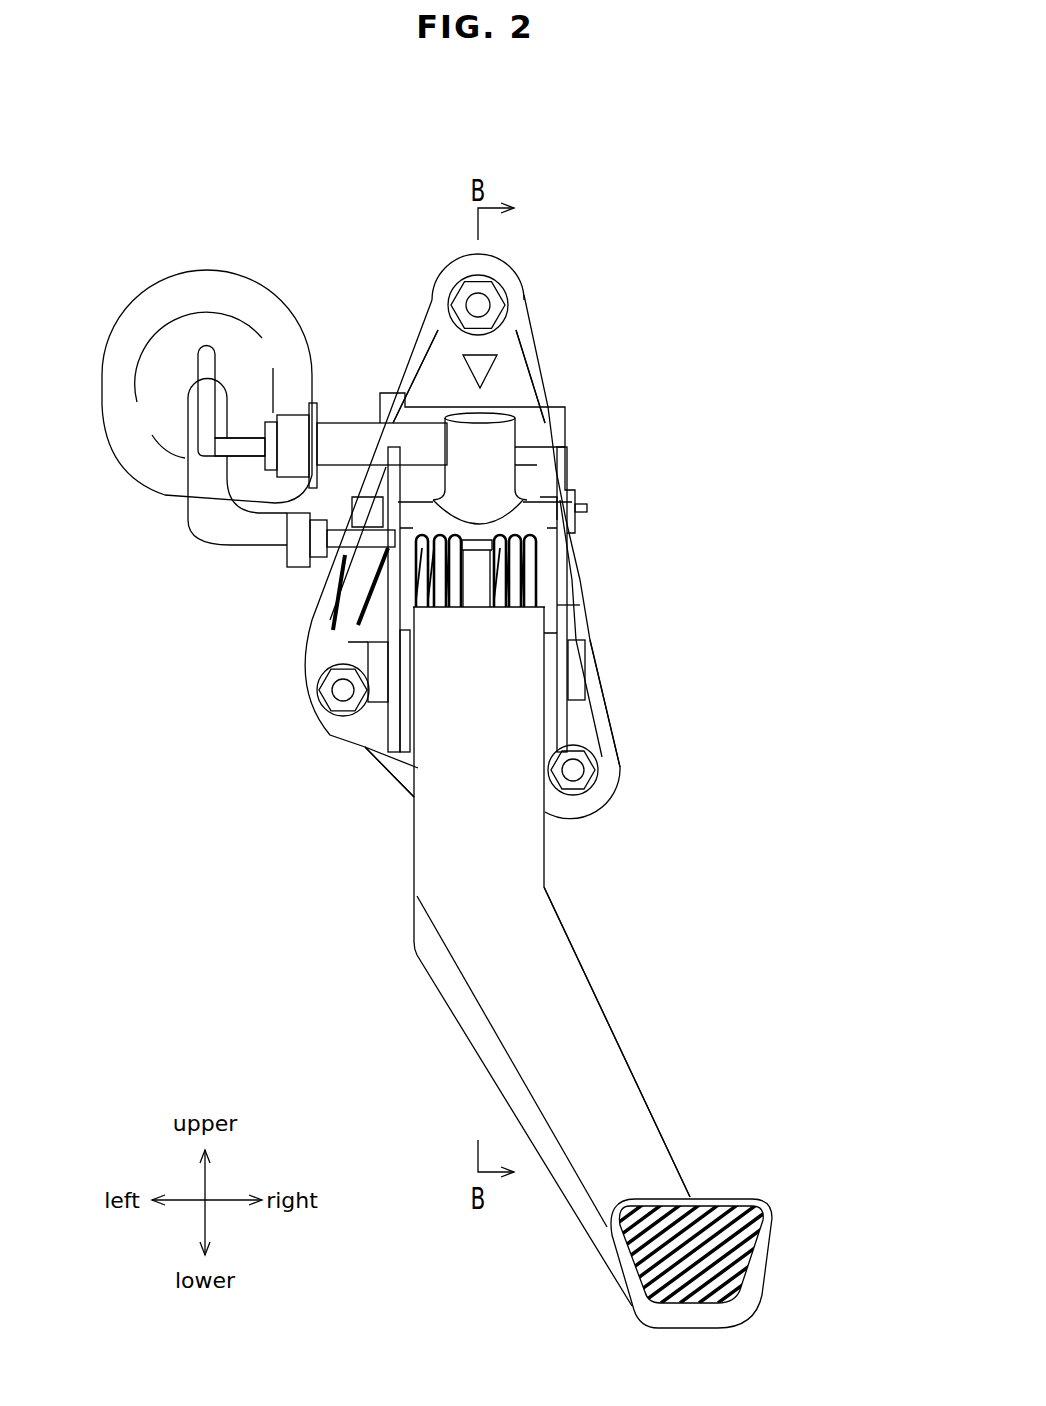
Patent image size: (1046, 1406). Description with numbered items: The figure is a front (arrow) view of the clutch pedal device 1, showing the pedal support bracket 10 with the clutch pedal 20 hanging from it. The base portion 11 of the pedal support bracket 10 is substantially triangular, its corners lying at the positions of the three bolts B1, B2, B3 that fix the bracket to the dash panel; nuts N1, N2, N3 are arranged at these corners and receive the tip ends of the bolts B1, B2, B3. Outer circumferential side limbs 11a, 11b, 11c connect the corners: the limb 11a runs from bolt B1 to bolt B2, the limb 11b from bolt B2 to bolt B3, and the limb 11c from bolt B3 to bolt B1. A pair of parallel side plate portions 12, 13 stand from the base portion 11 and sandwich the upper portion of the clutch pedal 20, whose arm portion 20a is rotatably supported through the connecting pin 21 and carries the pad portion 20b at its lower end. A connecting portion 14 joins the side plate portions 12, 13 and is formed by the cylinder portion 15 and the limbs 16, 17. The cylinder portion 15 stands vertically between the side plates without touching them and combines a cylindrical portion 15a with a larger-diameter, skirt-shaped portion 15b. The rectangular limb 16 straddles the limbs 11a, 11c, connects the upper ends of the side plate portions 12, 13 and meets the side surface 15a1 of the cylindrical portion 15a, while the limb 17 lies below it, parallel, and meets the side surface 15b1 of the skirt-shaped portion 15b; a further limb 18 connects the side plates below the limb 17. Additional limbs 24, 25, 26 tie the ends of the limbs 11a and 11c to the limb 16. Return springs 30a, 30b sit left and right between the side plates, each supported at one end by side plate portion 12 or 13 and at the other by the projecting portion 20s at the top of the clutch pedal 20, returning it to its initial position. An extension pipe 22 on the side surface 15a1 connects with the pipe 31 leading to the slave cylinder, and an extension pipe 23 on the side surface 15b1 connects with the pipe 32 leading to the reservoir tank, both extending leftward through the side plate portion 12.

The clutch pedal device 1 is at (600, 236).
The pedal support bracket 10 is at (533, 313).
The base portion 11 is at (549, 388).
The outer circumferential side limb 11a is at (420, 352).
The outer circumferential side limb 11b is at (405, 792).
The outer circumferential side limb 11c is at (601, 713).
The side plate portion 12 is at (362, 750).
The side plate portion 13 is at (563, 736).
The connecting portion 14 is at (576, 420).
The cylinder portion 15 is at (531, 468).
The cylindrical portion 15a is at (496, 504).
The side surface 15a1 is at (456, 462).
The substantially conically and trapezoidally shaped portion 15b is at (390, 478).
The side surface 15b1 is at (322, 538).
The limb 16 is at (528, 432).
The limb 17 is at (565, 503).
The limb 18 is at (555, 600).
The clutch pedal 20 is at (632, 1047).
The arm portion 20a is at (556, 947).
The pad portion 20b is at (772, 1208).
The projecting portion 20s is at (485, 570).
The connecting pin 21 is at (578, 672).
The extension pipe 22 is at (338, 425).
The extension pipe 23 is at (342, 544).
The limb 24 is at (456, 356).
The limb 25 is at (490, 370).
The limb 26 is at (330, 610).
The return spring 30a is at (320, 642).
The return spring 30b is at (577, 603).
The pipe 31 is at (205, 365).
The pipe 32 is at (192, 476).
The bolt B1 is at (485, 310).
The bolt B2 is at (345, 693).
The bolt B3 is at (575, 782).
The nut N1 is at (470, 298).
The nut N2 is at (331, 689).
The nut N3 is at (589, 769).